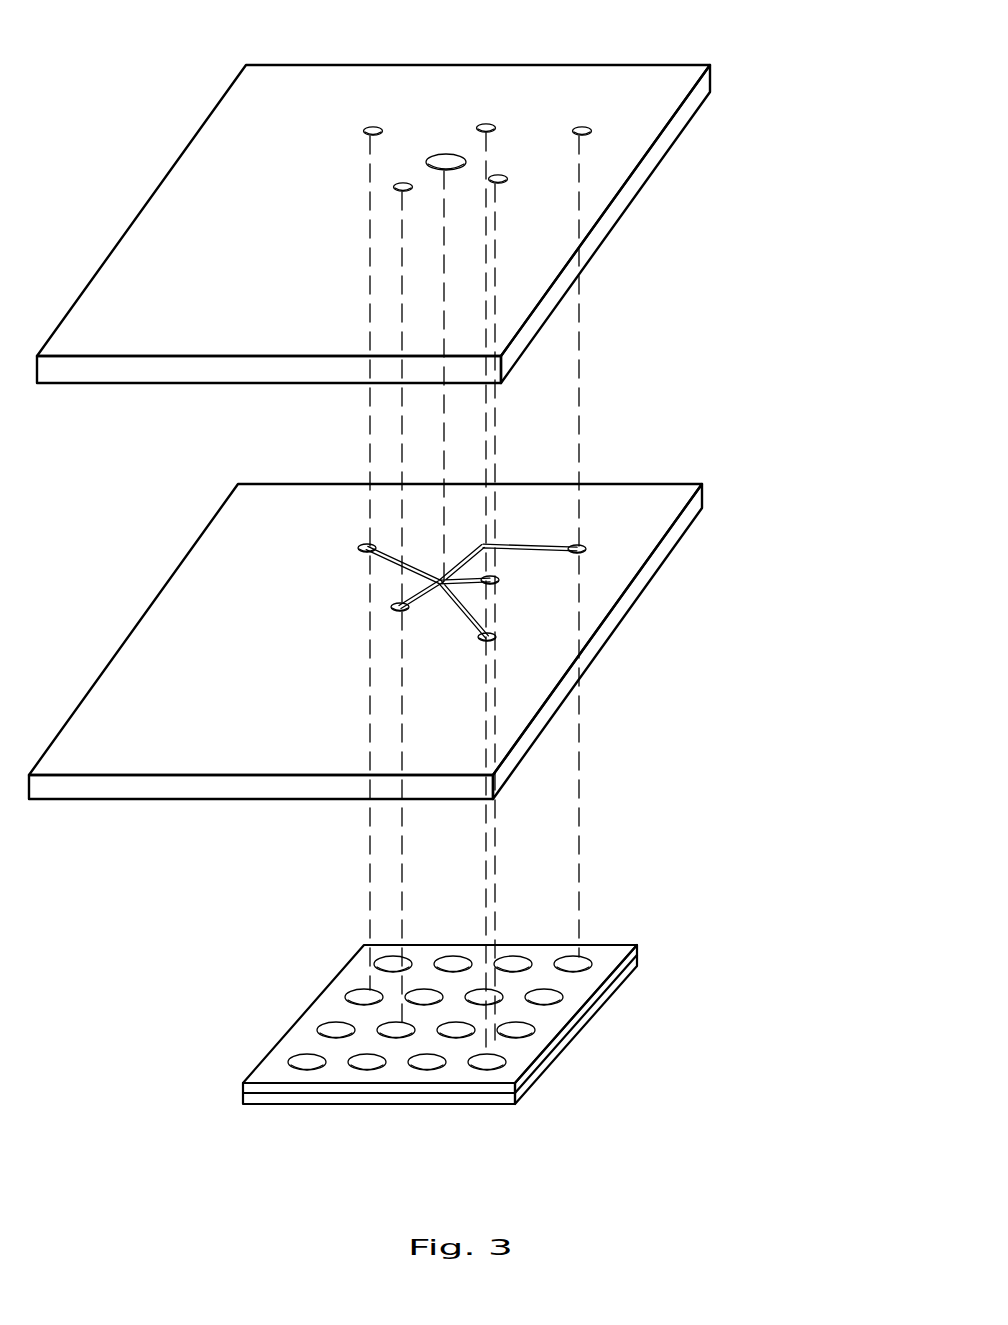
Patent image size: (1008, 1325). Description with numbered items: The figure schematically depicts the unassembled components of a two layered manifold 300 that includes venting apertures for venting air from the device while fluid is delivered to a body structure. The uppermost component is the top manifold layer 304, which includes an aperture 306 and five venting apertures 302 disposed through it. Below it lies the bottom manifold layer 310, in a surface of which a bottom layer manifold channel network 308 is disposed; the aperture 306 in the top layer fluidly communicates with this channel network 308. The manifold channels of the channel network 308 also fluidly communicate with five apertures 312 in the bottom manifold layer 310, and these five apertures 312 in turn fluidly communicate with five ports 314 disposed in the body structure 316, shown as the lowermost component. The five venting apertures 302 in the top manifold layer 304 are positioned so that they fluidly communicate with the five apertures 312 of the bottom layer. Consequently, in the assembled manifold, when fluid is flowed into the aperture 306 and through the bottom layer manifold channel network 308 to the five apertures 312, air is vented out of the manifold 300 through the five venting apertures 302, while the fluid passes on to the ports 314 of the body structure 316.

The two layered manifold 300 is at (786, 72).
The venting apertures 302 is at (371, 134).
The top manifold layer 304 is at (595, 253).
The aperture 306 is at (446, 155).
The bottom layer manifold channel network 308 is at (540, 550).
The bottom manifold layer 310 is at (540, 737).
The apertures 312 is at (365, 551).
The ports 314 is at (580, 966).
The body structure 316 is at (567, 1048).